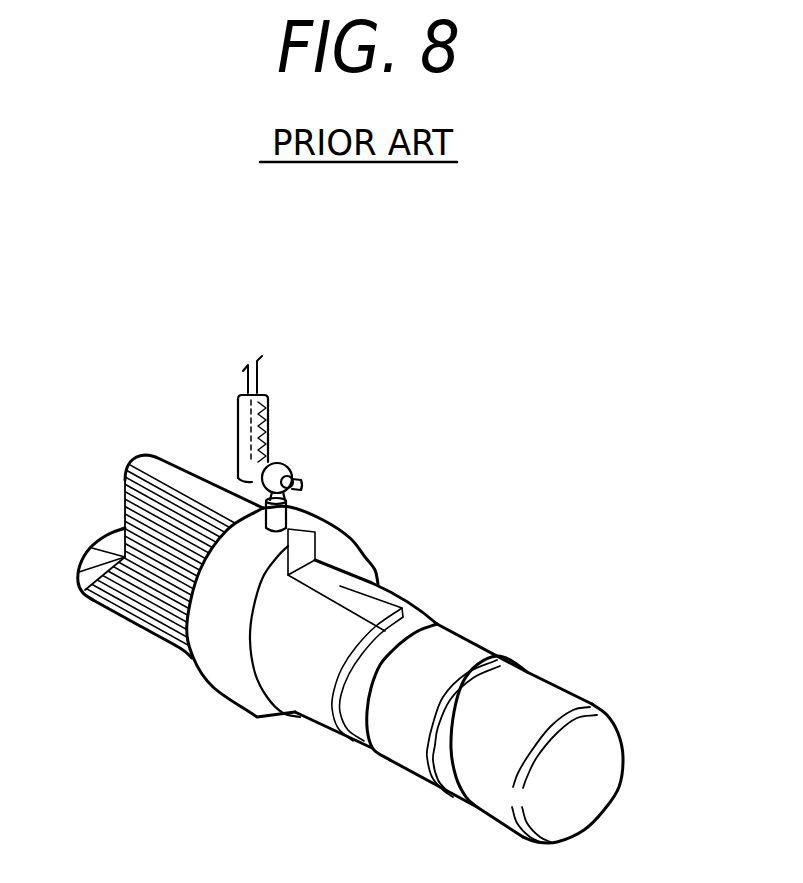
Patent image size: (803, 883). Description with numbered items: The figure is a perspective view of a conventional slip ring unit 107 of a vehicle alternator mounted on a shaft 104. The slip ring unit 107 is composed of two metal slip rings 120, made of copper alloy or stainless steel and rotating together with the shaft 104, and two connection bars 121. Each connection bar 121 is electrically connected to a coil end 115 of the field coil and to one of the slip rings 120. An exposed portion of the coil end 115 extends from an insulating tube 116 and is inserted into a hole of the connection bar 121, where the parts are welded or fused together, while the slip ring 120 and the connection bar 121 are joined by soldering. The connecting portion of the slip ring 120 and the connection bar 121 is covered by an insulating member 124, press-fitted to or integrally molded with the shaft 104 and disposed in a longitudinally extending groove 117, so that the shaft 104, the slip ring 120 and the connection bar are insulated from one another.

The shaft 104 is at (153, 483).
The slip ring unit 107 is at (591, 689).
The coil end 115 is at (260, 373).
The insulating tube 116 is at (272, 418).
The longitudinally extending groove 117 is at (369, 598).
The slip ring 120 is at (543, 687).
The connection bar 121 is at (294, 469).
The insulating member 124 is at (409, 601).